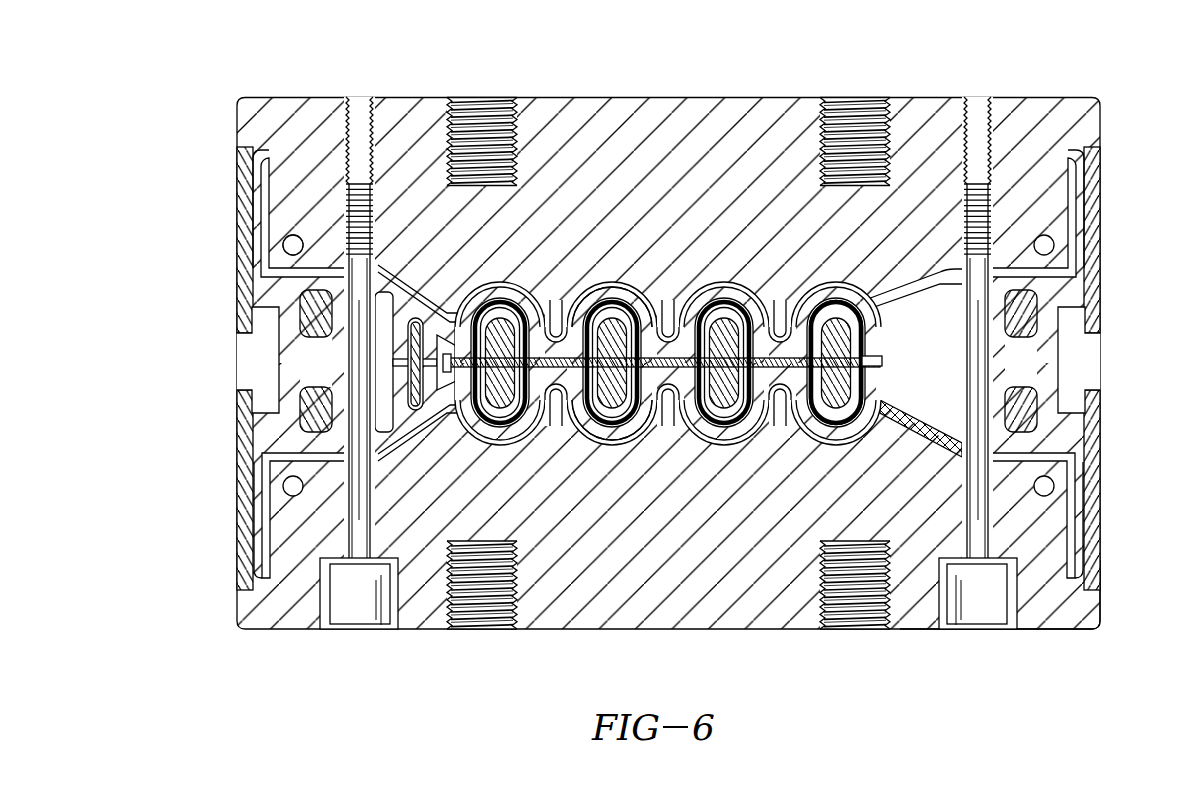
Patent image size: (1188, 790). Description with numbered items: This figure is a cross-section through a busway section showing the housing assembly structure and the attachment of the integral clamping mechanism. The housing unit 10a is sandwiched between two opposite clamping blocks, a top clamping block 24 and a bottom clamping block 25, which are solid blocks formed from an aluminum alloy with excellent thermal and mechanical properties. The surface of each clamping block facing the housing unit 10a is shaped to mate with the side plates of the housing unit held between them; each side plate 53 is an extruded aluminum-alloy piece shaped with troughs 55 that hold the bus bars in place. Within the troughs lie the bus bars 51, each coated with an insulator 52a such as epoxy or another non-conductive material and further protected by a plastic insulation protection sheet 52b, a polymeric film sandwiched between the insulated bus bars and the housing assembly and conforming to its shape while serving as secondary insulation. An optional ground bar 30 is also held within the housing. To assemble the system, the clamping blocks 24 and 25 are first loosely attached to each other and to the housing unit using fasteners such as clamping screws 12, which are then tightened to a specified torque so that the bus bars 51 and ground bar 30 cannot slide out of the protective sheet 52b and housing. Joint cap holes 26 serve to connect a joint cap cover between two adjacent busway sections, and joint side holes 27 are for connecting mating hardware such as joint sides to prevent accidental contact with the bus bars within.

The top clamping block 24 is at (1063, 107).
The bottom clamping block 25 is at (1086, 612).
The joint cap holes 26 is at (486, 103).
The joint side holes 27 is at (292, 244).
The troughs 55 is at (530, 282).
The side plate 53 is at (618, 380).
The insulation protection sheet 52b is at (830, 367).
The insulator 52a is at (813, 305).
The bus bars 51 is at (832, 410).
The housing unit 10a is at (612, 442).
The ground bar 30 is at (416, 410).
The clamping screws 12 is at (968, 612).